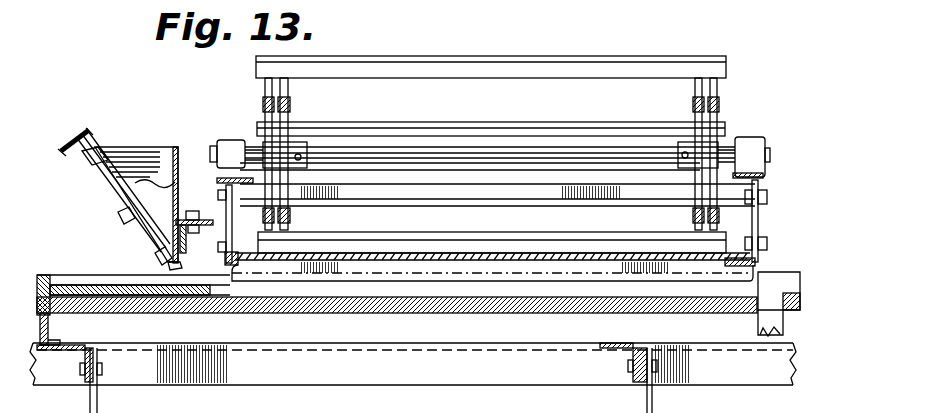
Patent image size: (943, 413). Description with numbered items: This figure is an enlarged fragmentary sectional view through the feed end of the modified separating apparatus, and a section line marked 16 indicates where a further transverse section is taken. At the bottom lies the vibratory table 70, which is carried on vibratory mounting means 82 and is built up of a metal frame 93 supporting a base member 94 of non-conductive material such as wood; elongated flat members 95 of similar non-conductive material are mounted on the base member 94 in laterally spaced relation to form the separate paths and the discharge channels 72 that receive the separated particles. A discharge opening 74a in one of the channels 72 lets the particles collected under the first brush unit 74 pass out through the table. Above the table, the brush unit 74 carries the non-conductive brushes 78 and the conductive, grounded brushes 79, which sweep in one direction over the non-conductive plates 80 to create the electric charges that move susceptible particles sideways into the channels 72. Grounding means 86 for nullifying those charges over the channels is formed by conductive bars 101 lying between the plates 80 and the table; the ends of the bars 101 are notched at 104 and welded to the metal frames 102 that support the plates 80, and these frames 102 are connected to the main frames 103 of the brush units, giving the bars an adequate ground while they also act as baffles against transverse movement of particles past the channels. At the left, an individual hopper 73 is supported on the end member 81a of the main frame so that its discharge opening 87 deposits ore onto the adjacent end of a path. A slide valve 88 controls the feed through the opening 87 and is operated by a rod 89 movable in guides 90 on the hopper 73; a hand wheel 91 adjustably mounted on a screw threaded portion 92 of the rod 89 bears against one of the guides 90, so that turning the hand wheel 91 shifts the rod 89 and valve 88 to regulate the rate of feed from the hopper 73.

The vibratory table 70 is at (413, 332).
The discharge channel 72 is at (108, 284).
The hopper 73 is at (151, 152).
The brush unit 74 is at (566, 88).
The discharge opening 74a is at (777, 300).
The brush 78 is at (456, 59).
The brush 79 is at (349, 108).
The non-conductive plate 80 is at (437, 282).
The end member 81a is at (210, 226).
The vibratory mounting means 82 is at (100, 405).
The grounding means 86 is at (500, 286).
The discharge opening 87 is at (185, 268).
The slide valve 88 is at (160, 266).
The rod 89 is at (141, 244).
The guide 90 is at (121, 217).
The hand wheel 91 is at (71, 150).
The screw threaded portion 92 is at (97, 166).
The metal frame 93 is at (87, 344).
The base member 94 is at (321, 311).
The flat member 95 is at (148, 312).
The bar 101 is at (393, 280).
The metal frame 102 is at (233, 250).
The main frame 103 is at (245, 150).
The notch 104 is at (237, 311).
The section line 16- 16 is at (773, 262).